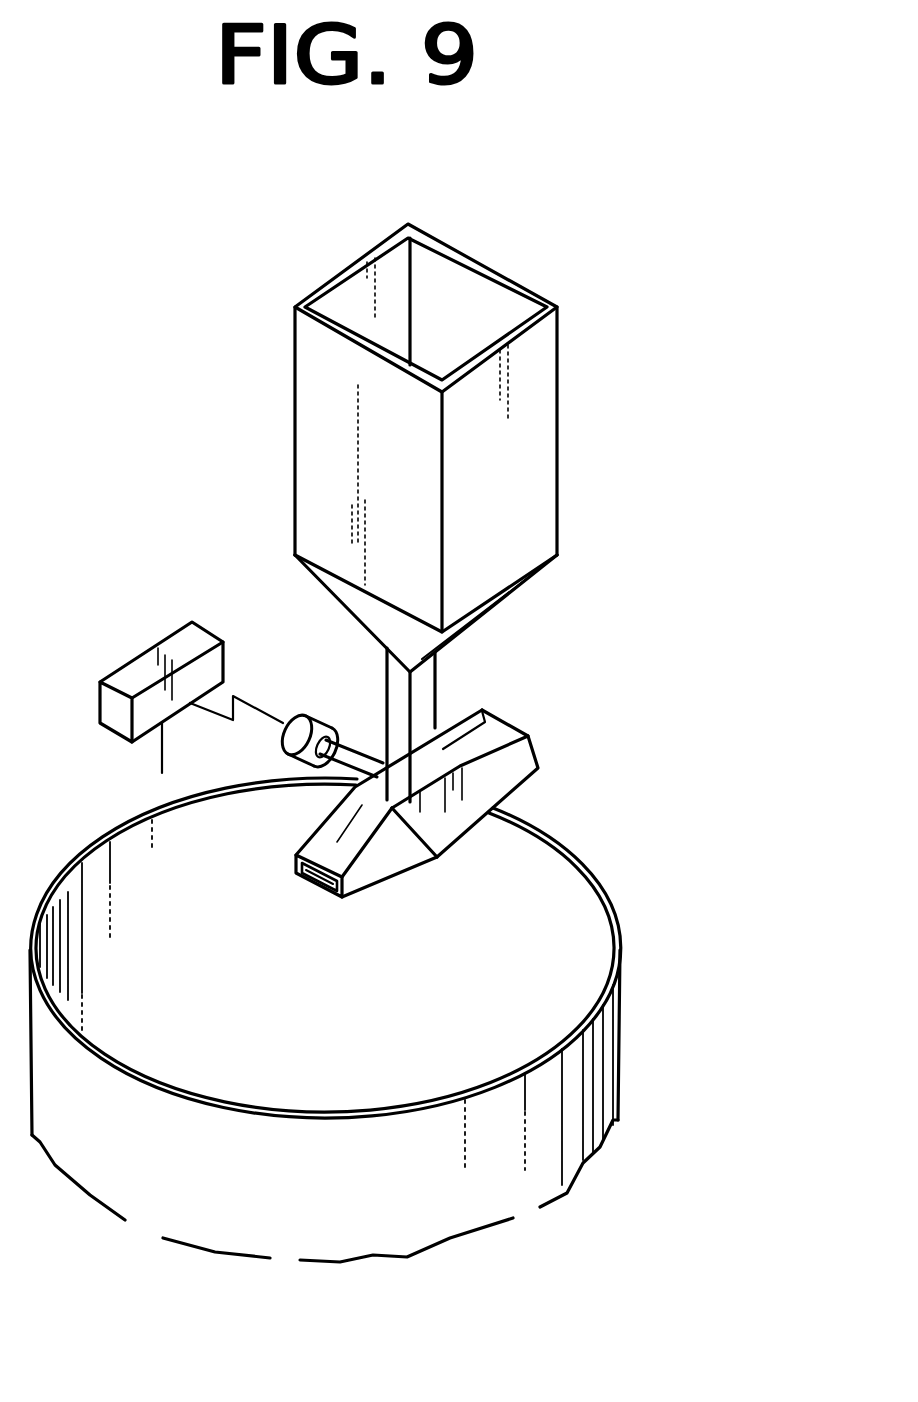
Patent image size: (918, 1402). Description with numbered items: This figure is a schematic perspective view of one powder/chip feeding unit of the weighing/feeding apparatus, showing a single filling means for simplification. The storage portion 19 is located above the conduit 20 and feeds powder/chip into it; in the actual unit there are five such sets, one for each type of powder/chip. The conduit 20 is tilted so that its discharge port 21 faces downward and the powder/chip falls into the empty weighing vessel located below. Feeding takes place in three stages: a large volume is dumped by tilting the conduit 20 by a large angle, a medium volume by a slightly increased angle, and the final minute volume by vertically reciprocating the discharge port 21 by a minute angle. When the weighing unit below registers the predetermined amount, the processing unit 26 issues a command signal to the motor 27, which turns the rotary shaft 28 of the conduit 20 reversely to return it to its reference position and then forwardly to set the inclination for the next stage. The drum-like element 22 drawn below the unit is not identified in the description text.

The storage portion 19 is at (533, 437).
The conduit 20 is at (522, 758).
The discharge port 21 is at (308, 880).
The drum 22 is at (465, 1172).
The processing unit 26 is at (140, 662).
The motor 27 is at (308, 720).
The rotary shaft 28 is at (349, 757).